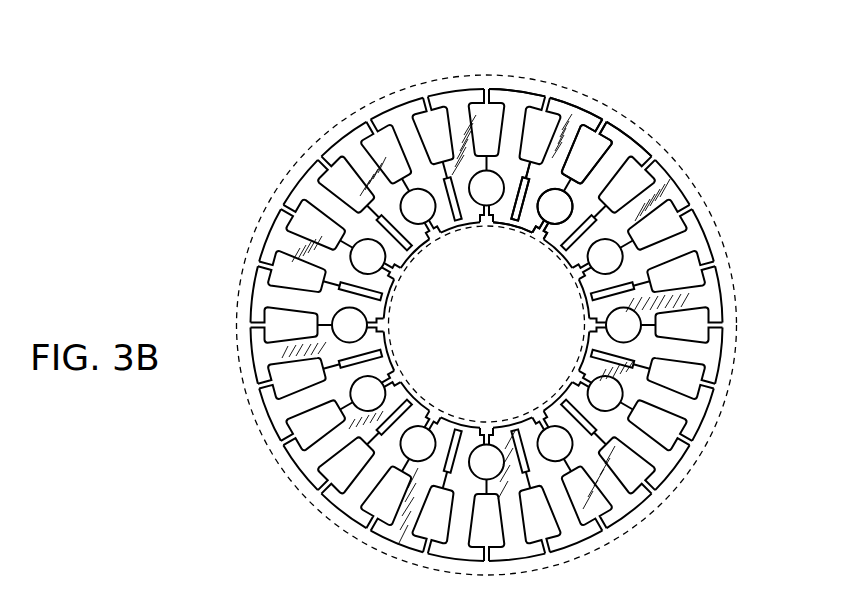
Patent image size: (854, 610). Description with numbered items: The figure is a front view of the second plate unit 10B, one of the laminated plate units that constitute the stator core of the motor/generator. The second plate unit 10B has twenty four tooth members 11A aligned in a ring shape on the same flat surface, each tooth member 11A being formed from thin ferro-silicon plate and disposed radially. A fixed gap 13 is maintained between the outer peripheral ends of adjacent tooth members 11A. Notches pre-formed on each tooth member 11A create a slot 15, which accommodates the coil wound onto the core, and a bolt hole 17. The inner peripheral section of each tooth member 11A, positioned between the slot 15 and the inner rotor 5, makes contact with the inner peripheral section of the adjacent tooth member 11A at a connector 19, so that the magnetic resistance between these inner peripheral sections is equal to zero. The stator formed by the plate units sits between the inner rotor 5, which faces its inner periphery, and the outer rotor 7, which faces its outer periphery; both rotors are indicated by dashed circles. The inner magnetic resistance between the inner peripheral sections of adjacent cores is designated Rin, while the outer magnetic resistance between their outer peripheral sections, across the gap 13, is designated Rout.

The second plate unit 10B is at (535, 73).
The outer magnetic resistance Rout is at (543, 104).
The slot 15 is at (597, 147).
The tooth member 11A is at (616, 167).
The gap 13 is at (566, 200).
The connector 19 is at (530, 182).
The inner magnetic resistance Rin is at (520, 227).
The bolt hole 17 is at (550, 228).
The inner rotor 5 is at (392, 352).
The outer rotor 7 is at (732, 294).